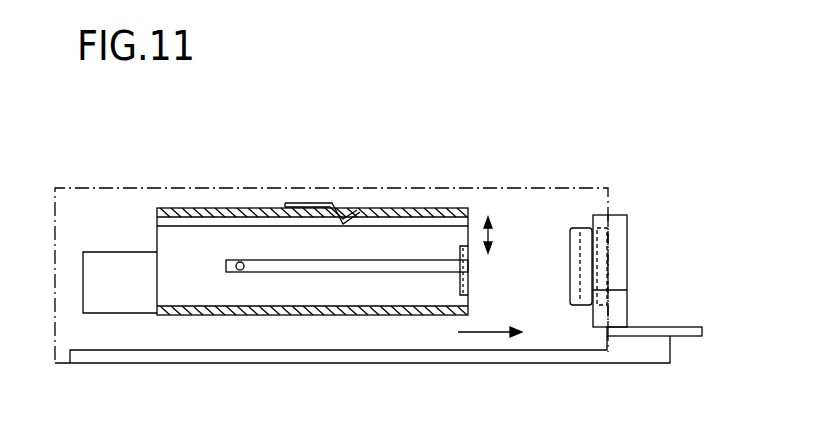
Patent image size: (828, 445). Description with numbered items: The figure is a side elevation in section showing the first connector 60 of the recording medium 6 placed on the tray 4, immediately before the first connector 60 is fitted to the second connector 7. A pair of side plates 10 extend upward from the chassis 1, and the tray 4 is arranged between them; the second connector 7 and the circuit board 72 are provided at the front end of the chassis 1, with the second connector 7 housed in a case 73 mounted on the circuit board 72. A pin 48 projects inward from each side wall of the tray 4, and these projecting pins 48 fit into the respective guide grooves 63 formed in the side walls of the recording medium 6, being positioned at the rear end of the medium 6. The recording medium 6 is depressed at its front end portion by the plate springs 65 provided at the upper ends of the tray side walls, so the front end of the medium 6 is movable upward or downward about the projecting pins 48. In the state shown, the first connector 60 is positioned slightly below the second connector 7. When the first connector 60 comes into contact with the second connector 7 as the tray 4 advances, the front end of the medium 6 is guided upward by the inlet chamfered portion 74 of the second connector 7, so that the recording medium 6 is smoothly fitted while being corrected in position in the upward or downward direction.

The chassis 1 is at (508, 360).
The tray 4 is at (425, 208).
The recording medium 6 is at (195, 235).
The second connector 7 is at (630, 228).
The side plate 10 is at (140, 197).
The pin 48 is at (240, 270).
The first connector 60 is at (463, 281).
The guide groove 63 is at (362, 262).
The plate spring 65 is at (313, 207).
The circuit board 72 is at (675, 324).
The case 73 is at (620, 292).
The chamfered portion 74 is at (570, 247).